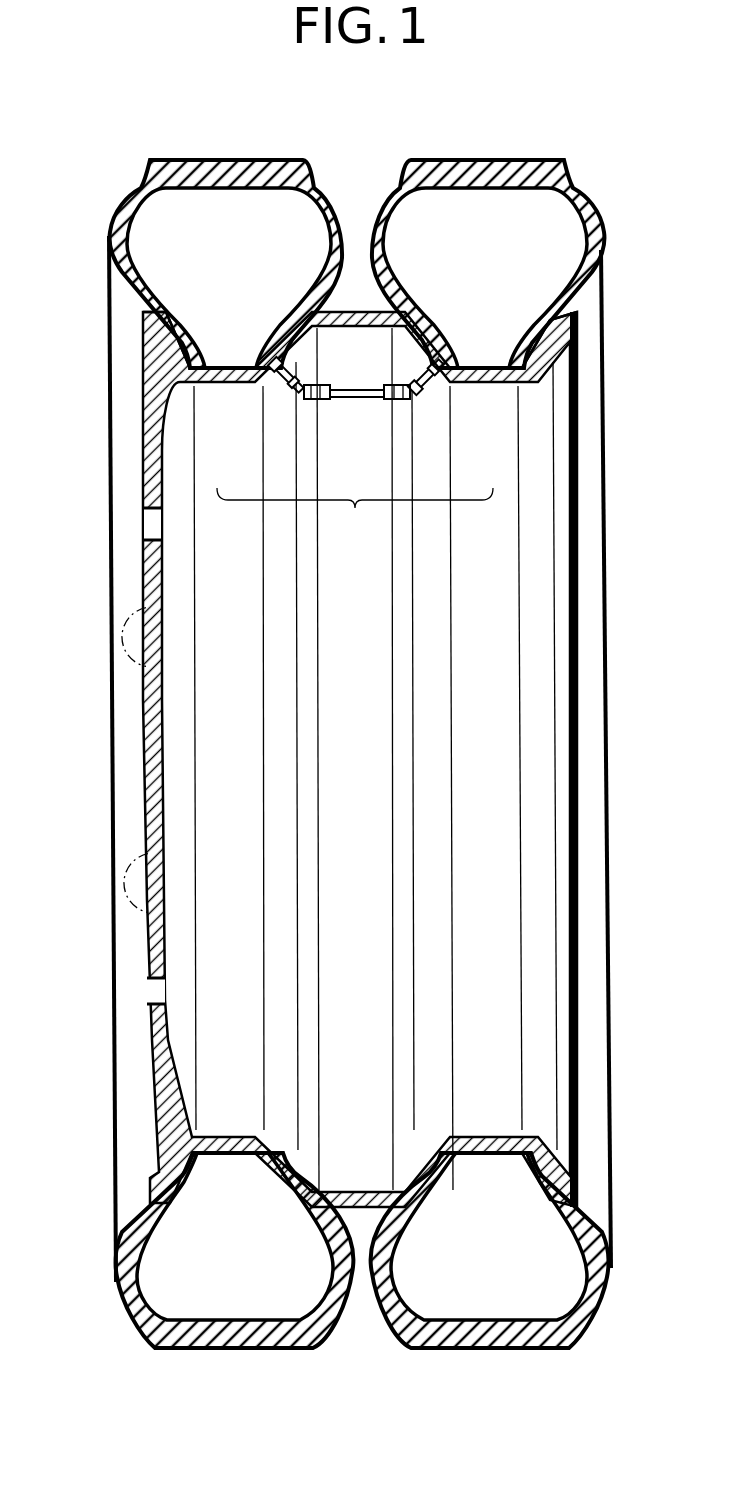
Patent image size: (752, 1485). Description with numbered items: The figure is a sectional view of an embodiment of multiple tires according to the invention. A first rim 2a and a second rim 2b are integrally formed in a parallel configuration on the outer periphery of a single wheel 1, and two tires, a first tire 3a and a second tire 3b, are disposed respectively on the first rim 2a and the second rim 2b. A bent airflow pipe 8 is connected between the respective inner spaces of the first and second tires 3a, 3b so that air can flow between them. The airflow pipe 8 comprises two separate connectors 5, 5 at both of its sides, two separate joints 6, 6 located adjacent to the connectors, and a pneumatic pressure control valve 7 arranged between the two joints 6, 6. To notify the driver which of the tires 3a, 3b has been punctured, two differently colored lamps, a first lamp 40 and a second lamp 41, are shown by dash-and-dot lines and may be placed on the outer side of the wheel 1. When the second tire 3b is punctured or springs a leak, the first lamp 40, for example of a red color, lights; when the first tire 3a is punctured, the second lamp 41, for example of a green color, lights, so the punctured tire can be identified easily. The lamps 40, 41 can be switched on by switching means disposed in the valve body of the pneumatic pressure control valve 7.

The wheel 1 is at (152, 1075).
The first rim 2a is at (556, 336).
The second rim 2b is at (153, 337).
The first tire 3a is at (493, 158).
The second tire 3b is at (224, 158).
The connector 5 is at (275, 385).
The joint 6 is at (304, 398).
The pneumatic pressure control valve 7 is at (350, 400).
The airflow pipe 8 is at (355, 453).
The first lamp 40 is at (118, 640).
The second lamp 41 is at (120, 884).